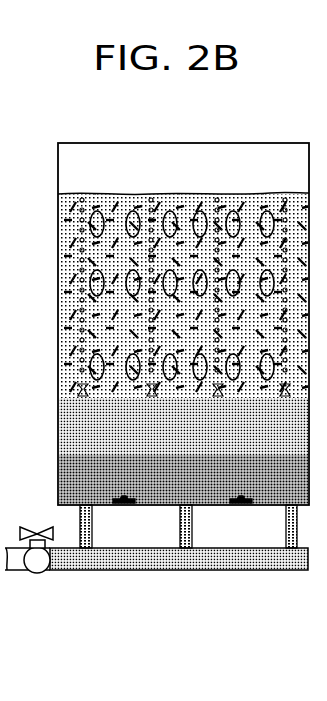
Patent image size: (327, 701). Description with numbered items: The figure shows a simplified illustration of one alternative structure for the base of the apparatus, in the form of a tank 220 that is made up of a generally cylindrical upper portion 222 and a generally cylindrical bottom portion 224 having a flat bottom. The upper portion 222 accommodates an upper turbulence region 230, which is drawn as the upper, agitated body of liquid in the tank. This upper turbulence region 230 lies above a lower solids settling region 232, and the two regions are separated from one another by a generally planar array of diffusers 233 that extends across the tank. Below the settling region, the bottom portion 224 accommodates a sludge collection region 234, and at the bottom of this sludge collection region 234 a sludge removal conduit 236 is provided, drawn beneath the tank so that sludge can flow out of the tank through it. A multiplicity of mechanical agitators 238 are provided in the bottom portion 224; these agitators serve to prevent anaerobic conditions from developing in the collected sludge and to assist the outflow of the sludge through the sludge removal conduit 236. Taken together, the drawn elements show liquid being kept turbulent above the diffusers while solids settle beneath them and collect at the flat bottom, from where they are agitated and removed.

The tank 220 is at (103, 143).
The upper portion 222 is at (58, 213).
The upper turbulence region 230 is at (100, 297).
The array of diffusers 233 is at (147, 395).
The lower solids settling region 232 is at (135, 435).
The sludge collection region 234 is at (122, 472).
The bottom portion 224 is at (58, 478).
The sludge removal conduit 236 is at (126, 560).
The mechanical agitators 238 is at (135, 504).